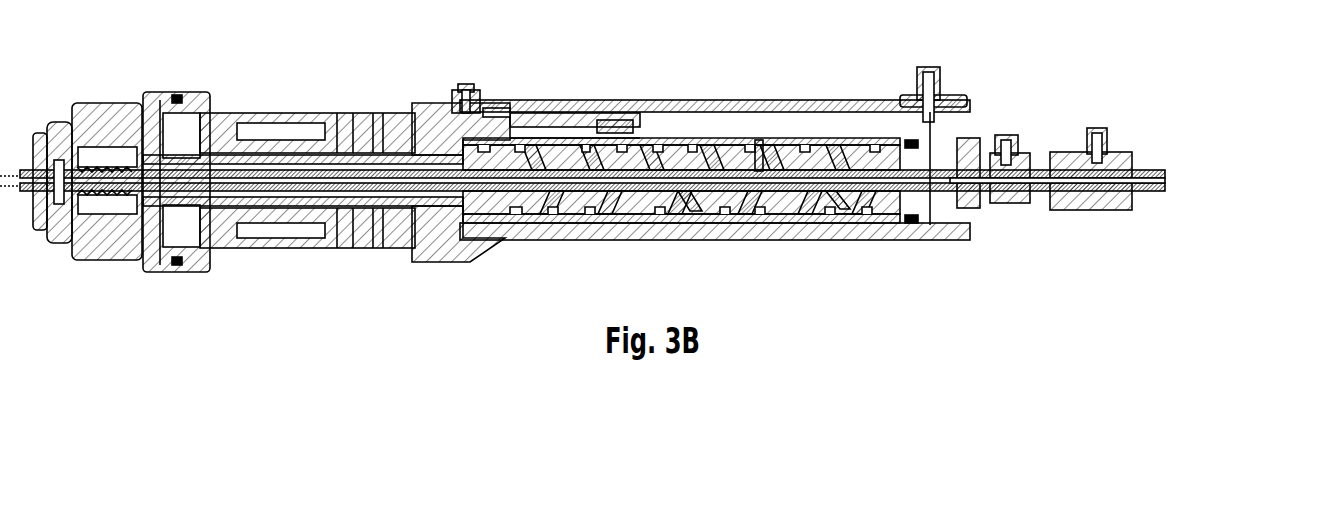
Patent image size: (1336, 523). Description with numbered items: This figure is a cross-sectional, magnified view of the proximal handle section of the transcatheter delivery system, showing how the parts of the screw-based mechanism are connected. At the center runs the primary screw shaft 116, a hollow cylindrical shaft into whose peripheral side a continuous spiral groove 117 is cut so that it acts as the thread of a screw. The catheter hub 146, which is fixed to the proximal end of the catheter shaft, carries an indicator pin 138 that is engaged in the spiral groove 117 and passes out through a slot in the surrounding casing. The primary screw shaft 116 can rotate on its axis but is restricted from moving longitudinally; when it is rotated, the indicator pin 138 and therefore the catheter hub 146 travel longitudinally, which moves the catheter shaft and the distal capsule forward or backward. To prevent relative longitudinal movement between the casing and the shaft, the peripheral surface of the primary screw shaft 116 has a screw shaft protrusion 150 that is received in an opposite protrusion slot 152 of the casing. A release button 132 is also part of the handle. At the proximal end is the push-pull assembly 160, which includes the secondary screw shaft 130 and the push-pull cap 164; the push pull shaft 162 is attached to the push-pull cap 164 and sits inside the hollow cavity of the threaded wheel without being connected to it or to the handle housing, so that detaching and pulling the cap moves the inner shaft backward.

The primary screw shaft 116 is at (688, 199).
The continuous spiral groove 117 is at (598, 158).
The secondary screw shaft 130 is at (62, 193).
The release button 132 is at (462, 80).
The indicator pin 138 is at (835, 106).
The catheter hub 146 is at (835, 196).
The screw shaft protrusion 150 is at (659, 148).
The protrusion slot 152 is at (762, 142).
The push-pull assembly 160 is at (82, 82).
The push pull shaft 162 is at (278, 204).
The push-pull cap 164 is at (110, 248).